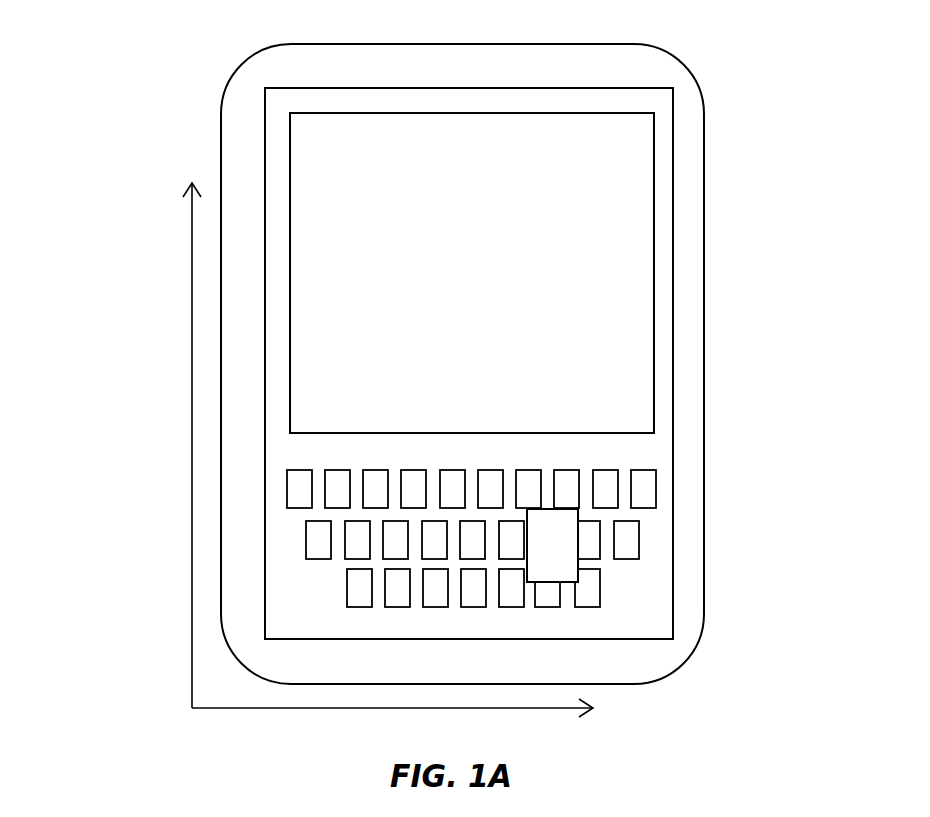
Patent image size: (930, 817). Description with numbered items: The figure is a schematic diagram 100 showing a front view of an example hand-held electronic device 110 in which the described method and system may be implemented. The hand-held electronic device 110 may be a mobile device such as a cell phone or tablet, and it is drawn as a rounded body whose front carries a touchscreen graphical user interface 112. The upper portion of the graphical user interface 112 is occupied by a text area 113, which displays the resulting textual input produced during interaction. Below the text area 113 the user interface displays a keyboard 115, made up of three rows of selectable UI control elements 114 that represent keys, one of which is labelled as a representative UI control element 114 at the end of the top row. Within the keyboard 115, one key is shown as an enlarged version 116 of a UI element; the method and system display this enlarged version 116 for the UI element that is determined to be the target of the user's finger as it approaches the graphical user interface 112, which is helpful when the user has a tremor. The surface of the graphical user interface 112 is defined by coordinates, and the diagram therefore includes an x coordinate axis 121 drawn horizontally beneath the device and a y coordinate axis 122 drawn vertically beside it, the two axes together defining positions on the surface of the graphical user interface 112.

The schematic diagram 100 is at (146, 69).
The hand-held electronic device 110 is at (704, 203).
The graphical user interface 112 is at (673, 283).
The text area 113 is at (654, 349).
The selectable UI control element 114 is at (657, 480).
The keyboard 115 is at (546, 530).
The enlarged version of a UI element 116 is at (570, 567).
The x coordinate 121 is at (270, 708).
The y coordinate 122 is at (192, 354).